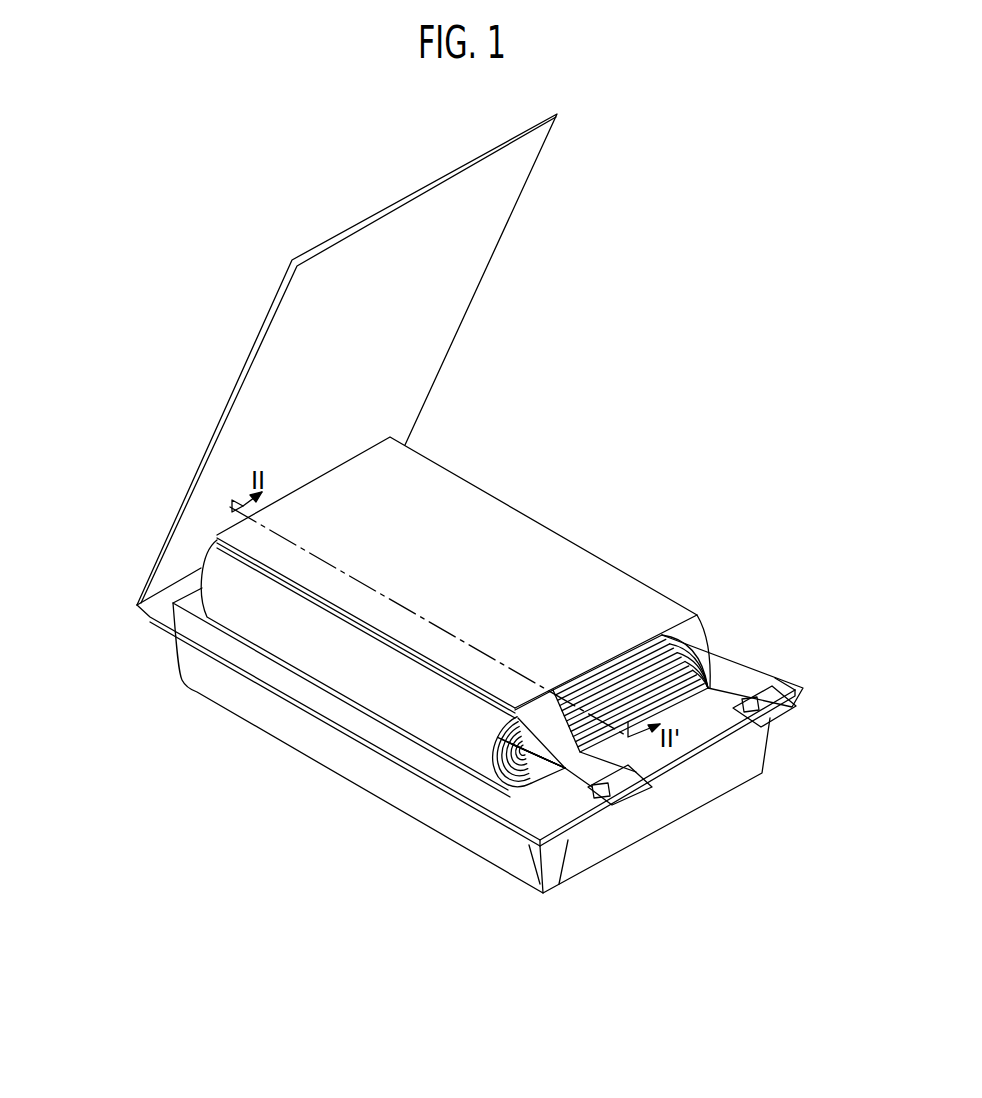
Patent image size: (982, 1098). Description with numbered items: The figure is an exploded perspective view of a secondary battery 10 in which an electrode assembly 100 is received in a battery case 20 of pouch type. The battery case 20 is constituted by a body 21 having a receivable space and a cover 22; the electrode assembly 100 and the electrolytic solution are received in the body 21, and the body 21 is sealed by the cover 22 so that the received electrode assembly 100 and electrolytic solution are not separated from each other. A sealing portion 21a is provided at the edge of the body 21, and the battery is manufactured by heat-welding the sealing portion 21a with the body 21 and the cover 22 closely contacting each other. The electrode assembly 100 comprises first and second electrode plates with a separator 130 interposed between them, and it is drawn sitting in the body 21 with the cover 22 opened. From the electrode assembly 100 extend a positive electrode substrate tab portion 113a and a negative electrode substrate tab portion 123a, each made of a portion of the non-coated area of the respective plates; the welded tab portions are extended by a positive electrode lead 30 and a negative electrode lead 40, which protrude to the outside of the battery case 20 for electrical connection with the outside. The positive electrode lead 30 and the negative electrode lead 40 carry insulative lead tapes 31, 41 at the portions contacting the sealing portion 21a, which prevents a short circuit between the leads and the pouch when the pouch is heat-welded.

The secondary battery 10 is at (203, 325).
The battery case 20 is at (430, 751).
The body 21 is at (570, 800).
The sealing portion 21a is at (177, 618).
The cover 22 is at (247, 422).
The electrode assembly 100 is at (528, 649).
The separator 130 is at (580, 567).
The positive electrode substrate tab portion 113a is at (717, 666).
The negative electrode substrate tab portion 123a is at (503, 790).
The positive electrode lead 30 is at (759, 698).
The insulative lead tape 31 is at (767, 695).
The negative electrode lead 40 is at (622, 805).
The insulative lead tape 41 is at (603, 793).